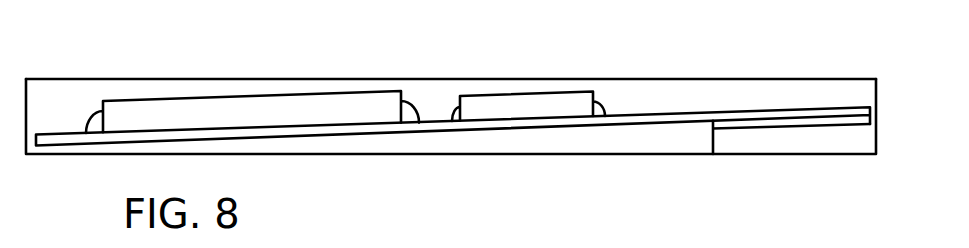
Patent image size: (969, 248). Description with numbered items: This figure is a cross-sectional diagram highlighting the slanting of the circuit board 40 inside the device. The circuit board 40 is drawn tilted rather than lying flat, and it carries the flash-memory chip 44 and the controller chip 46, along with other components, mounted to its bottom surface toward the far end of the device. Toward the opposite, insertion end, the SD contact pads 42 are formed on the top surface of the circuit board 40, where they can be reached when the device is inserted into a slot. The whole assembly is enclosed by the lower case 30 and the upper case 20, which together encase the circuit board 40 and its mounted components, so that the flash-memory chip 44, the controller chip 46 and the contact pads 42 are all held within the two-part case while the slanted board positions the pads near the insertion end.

The upper case 20 is at (447, 153).
The lower case 30 is at (126, 78).
The circuit board 40 is at (687, 112).
The SD contact pads 42 is at (783, 123).
The flash-memory chip 44 is at (278, 107).
The controller chip 46 is at (538, 108).